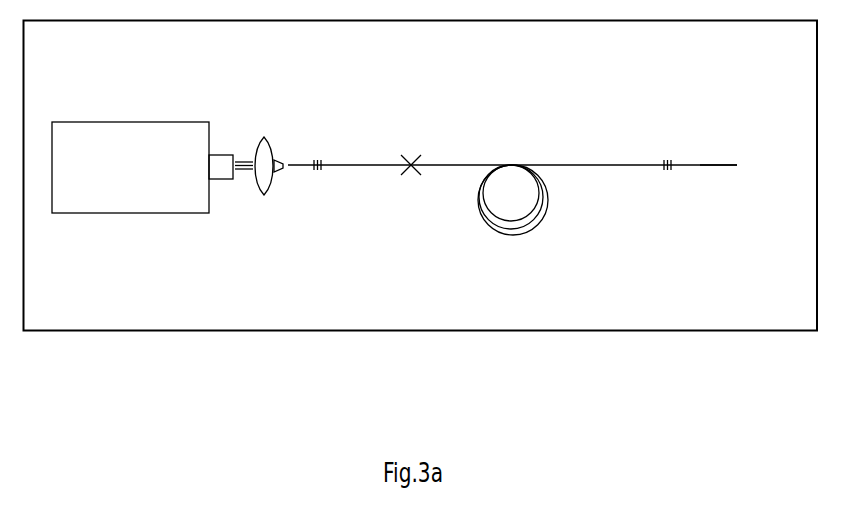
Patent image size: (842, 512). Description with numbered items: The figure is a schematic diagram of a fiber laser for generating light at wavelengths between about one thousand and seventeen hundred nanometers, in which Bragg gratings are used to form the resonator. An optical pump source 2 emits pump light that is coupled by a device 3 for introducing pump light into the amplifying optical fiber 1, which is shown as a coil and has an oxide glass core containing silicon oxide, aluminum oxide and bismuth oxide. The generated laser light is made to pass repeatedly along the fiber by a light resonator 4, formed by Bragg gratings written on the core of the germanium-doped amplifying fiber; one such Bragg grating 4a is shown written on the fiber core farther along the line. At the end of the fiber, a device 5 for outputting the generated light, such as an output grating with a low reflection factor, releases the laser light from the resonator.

The optical fiber 1 is at (513, 200).
The optical pump source 2 is at (152, 167).
The device for introducing pump light 3 is at (269, 182).
The light resonator 4 is at (318, 183).
The Bragg grating 4a is at (675, 182).
The device for outputting the generated light 5 is at (732, 167).